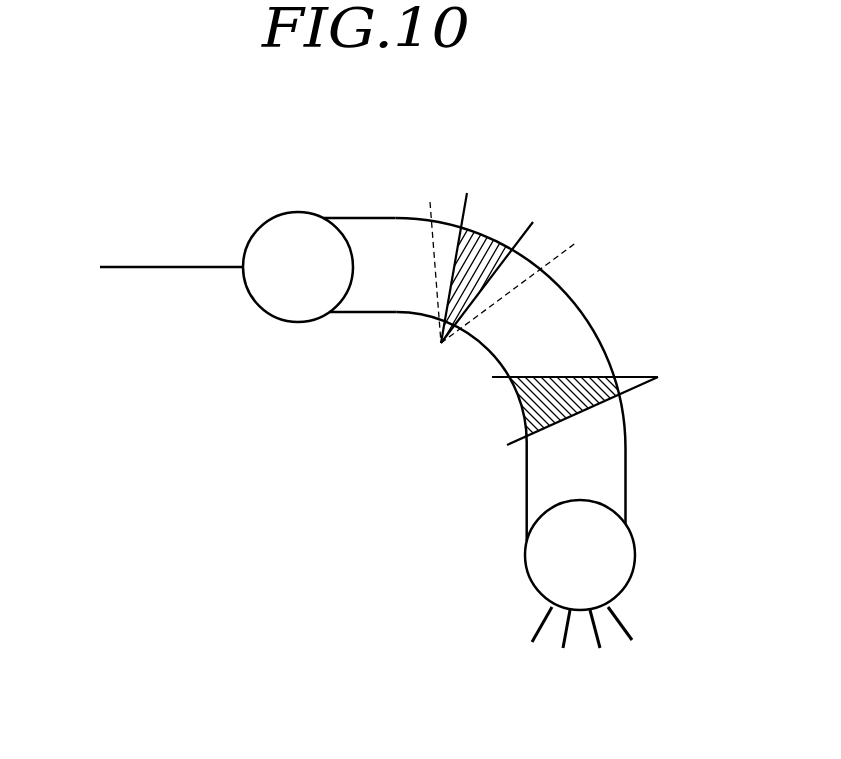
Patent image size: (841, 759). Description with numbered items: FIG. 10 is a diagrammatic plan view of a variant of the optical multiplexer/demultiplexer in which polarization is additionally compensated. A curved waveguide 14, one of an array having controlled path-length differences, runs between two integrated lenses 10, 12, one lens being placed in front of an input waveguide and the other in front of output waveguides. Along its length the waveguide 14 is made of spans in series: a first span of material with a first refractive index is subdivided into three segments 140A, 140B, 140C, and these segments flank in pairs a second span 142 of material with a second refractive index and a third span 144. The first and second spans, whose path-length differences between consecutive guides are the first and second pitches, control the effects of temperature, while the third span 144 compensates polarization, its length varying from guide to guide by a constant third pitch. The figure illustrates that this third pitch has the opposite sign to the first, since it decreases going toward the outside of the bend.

The integrated lens 10 is at (270, 204).
The integrated lens 12 is at (654, 575).
The waveguide 14 is at (476, 349).
The first segment of first span 140A is at (398, 288).
The second segment of first span 140B is at (521, 345).
The third segment of first span 140C is at (546, 481).
The second span 142 is at (472, 270).
The third span 144 is at (593, 385).